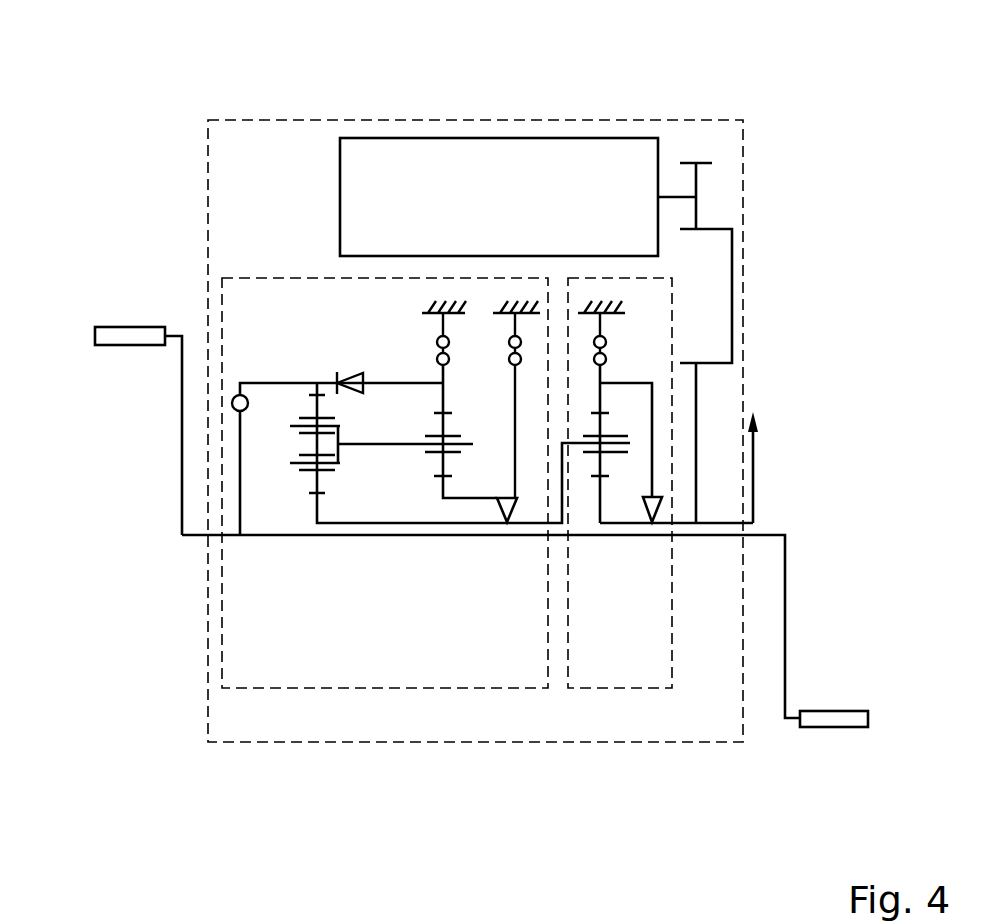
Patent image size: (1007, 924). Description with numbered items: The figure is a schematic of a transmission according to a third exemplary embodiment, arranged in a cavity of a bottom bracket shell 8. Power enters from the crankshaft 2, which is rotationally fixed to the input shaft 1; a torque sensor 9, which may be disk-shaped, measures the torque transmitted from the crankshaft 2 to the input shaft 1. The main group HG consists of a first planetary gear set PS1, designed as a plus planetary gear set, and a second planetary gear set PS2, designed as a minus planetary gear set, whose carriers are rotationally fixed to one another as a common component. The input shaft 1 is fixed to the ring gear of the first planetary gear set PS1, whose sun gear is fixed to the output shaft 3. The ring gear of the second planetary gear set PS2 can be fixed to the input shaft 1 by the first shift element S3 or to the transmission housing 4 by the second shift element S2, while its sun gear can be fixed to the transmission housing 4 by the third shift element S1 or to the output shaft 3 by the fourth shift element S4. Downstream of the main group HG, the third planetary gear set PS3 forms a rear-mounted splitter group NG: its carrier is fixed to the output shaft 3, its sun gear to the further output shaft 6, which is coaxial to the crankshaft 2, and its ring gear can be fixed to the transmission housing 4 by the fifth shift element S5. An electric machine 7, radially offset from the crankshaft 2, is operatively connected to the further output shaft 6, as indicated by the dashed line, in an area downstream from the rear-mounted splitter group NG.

The input shaft 1 is at (283, 383).
The crankshaft 2 is at (262, 540).
The output shaft 3 is at (383, 530).
The transmission housing 4 is at (450, 300).
The further output shaft 6 is at (712, 530).
The electric machine 7 is at (372, 170).
The bottom bracket shell 8 is at (315, 743).
The torque sensor 9 is at (232, 403).
The third shift element S1 is at (536, 344).
The second shift element S2 is at (424, 344).
The first shift element S3 is at (343, 363).
The fourth shift element S4 is at (480, 509).
The fifth shift element S5 is at (628, 347).
The main group HG is at (448, 700).
The rear-mounted splitter group NG is at (593, 703).
The first planetary gear set PS1 is at (315, 552).
The second planetary gear set PS2 is at (443, 552).
The third planetary gear set PS3 is at (600, 552).